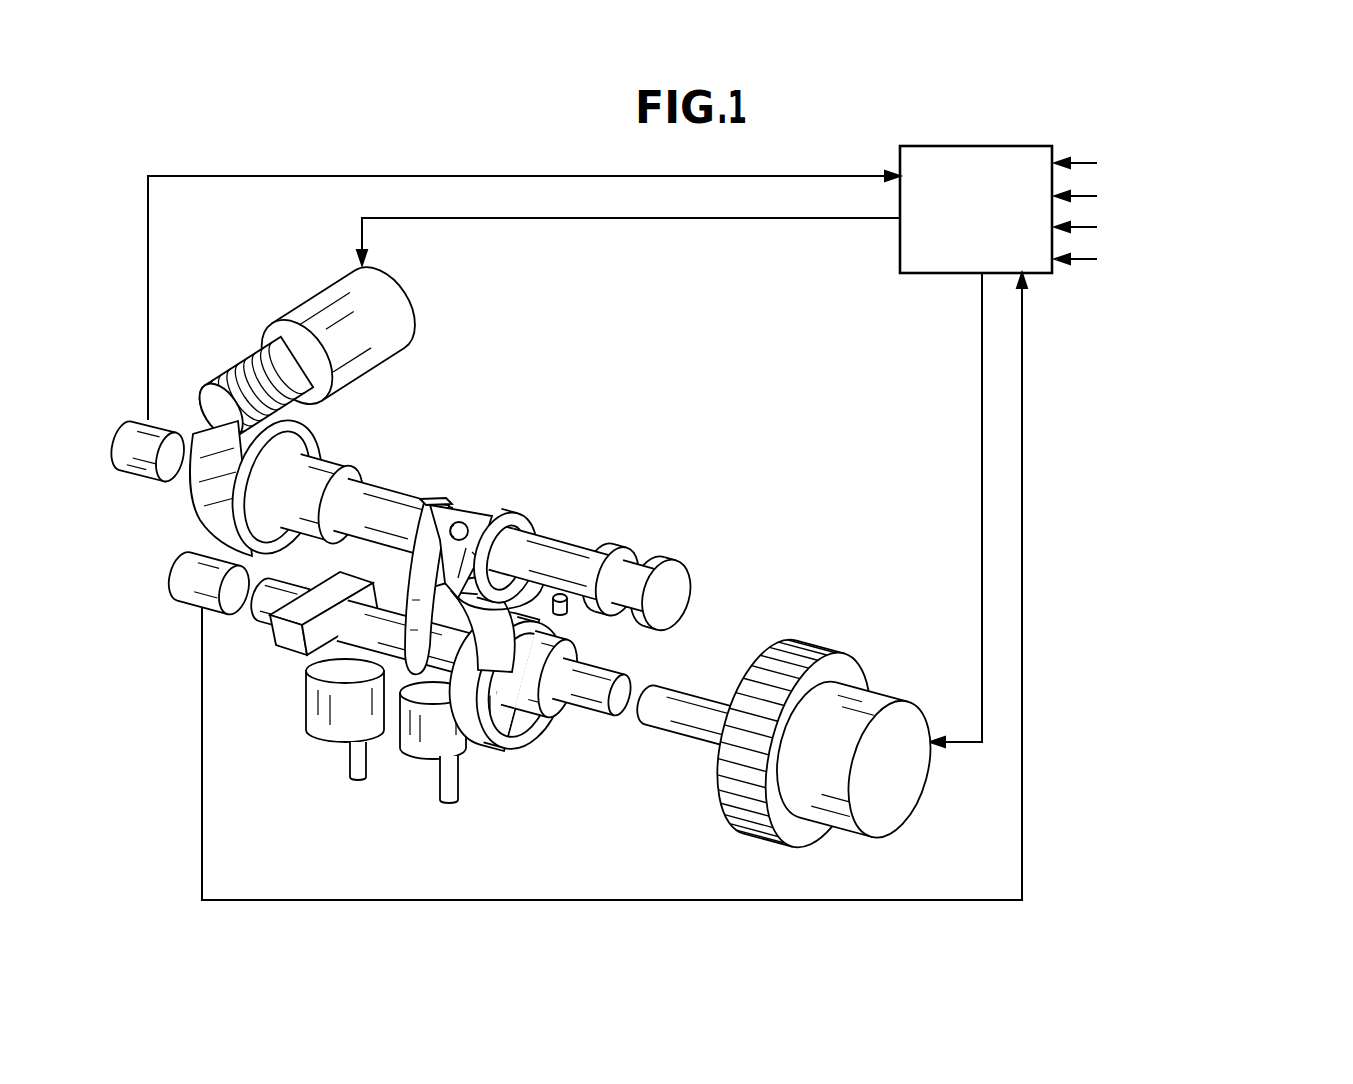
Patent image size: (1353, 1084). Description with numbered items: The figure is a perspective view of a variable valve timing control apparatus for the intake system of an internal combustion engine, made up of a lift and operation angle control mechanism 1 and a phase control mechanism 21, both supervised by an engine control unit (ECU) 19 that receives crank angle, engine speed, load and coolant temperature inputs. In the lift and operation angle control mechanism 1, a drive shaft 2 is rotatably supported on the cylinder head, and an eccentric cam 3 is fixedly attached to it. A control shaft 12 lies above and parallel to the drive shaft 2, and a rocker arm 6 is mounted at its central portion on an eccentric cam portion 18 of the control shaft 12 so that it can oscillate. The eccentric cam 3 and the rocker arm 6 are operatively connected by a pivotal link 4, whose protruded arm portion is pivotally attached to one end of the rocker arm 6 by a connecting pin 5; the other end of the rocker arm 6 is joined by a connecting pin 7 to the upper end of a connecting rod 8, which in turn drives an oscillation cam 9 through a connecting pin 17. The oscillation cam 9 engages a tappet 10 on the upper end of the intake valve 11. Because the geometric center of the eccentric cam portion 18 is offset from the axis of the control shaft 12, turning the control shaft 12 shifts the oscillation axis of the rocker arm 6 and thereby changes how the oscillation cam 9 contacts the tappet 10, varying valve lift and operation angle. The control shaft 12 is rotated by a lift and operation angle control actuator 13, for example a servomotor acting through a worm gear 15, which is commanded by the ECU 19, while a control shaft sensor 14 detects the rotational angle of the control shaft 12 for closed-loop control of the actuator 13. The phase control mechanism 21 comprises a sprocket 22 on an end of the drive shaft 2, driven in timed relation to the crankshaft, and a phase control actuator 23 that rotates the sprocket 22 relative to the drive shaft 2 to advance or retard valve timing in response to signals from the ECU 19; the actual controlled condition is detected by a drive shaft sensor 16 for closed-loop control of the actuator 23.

The lift and operation angle control mechanism 1 is at (369, 484).
The drive shaft 2 is at (441, 714).
The eccentric cam 3 is at (520, 740).
The pivotal link 4 is at (472, 745).
The connecting pin 5 is at (570, 607).
The rocker arm 6 is at (517, 512).
The connecting pin 7 is at (461, 522).
The connecting rod 8 is at (396, 700).
The oscillation cam 9 is at (367, 666).
The tappet 10 is at (428, 748).
The intake valve 11 is at (450, 803).
The control shaft 12 is at (373, 502).
The lift and operation angle control actuator 13 is at (384, 328).
The control shaft sensor 14 is at (145, 455).
The worm gear 15 is at (253, 350).
The drive shaft sensor 16 is at (194, 577).
The connecting pin 17 is at (468, 750).
The eccentric cam portion 18 is at (502, 563).
The engine control unit (ECU) 19 is at (898, 258).
The phase control mechanism 21 is at (805, 702).
The sprocket 22 is at (735, 812).
The phase control actuator 23 is at (897, 811).